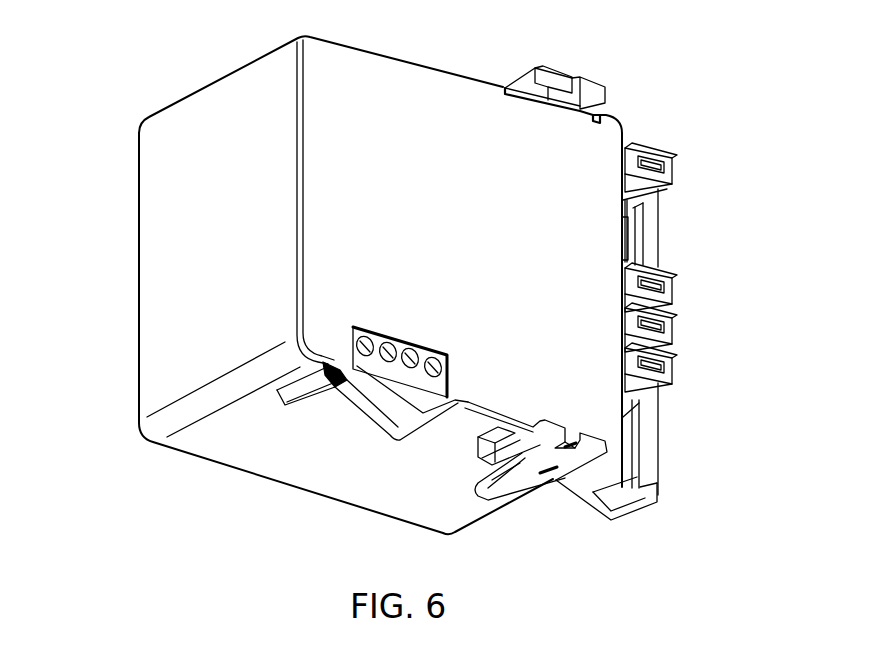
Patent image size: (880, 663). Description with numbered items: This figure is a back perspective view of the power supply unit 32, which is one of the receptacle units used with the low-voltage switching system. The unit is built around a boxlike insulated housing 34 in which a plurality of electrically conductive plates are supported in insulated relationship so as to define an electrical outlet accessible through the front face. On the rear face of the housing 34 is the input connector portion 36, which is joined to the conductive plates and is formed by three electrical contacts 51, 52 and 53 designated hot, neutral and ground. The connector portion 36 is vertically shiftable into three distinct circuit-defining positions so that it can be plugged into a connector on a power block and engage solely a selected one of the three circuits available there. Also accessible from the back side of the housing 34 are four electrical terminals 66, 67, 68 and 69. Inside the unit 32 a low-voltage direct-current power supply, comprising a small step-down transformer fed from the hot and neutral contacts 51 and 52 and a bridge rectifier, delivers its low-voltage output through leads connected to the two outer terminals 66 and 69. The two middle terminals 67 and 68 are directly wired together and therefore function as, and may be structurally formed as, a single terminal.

The power supply unit 32 is at (389, 54).
The boxlike insulated housing 34 is at (163, 268).
The input connector portion 36 is at (678, 242).
The hot electrical contact 51 is at (652, 167).
The neutral electrical contact 52 is at (673, 352).
The ground electrical contact 53 is at (668, 273).
The electrical terminal 66 is at (366, 338).
The electrical terminal 67 is at (388, 344).
The electrical terminal 68 is at (411, 350).
The electrical terminal 69 is at (434, 357).